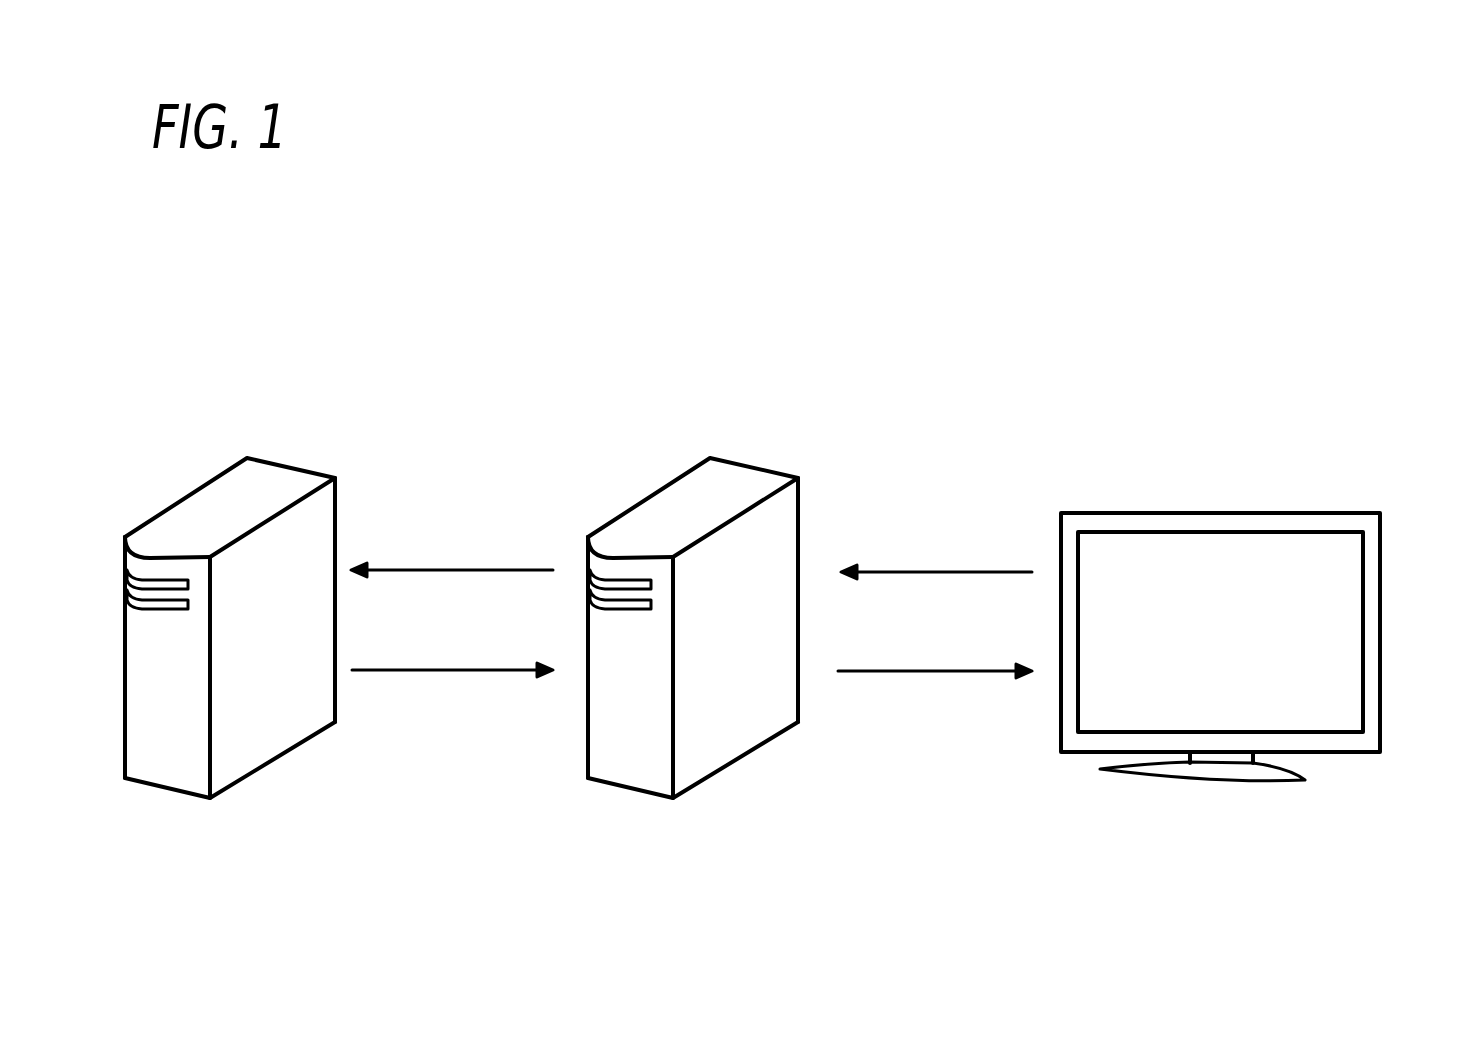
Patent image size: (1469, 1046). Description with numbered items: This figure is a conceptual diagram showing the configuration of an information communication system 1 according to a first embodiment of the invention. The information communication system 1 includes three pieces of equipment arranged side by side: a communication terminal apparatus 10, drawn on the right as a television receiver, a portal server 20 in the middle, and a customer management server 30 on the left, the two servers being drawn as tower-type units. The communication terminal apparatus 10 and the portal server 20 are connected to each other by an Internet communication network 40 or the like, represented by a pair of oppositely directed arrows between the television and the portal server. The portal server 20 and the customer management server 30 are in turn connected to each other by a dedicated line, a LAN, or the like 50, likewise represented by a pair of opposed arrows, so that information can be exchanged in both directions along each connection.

The information communication system 1 is at (932, 322).
The communication terminal apparatus 10 is at (1381, 517).
The portal server 20 is at (752, 463).
The customer management server 30 is at (288, 466).
The Internet communication network 40 is at (926, 508).
The dedicated line or LAN 50 is at (445, 518).